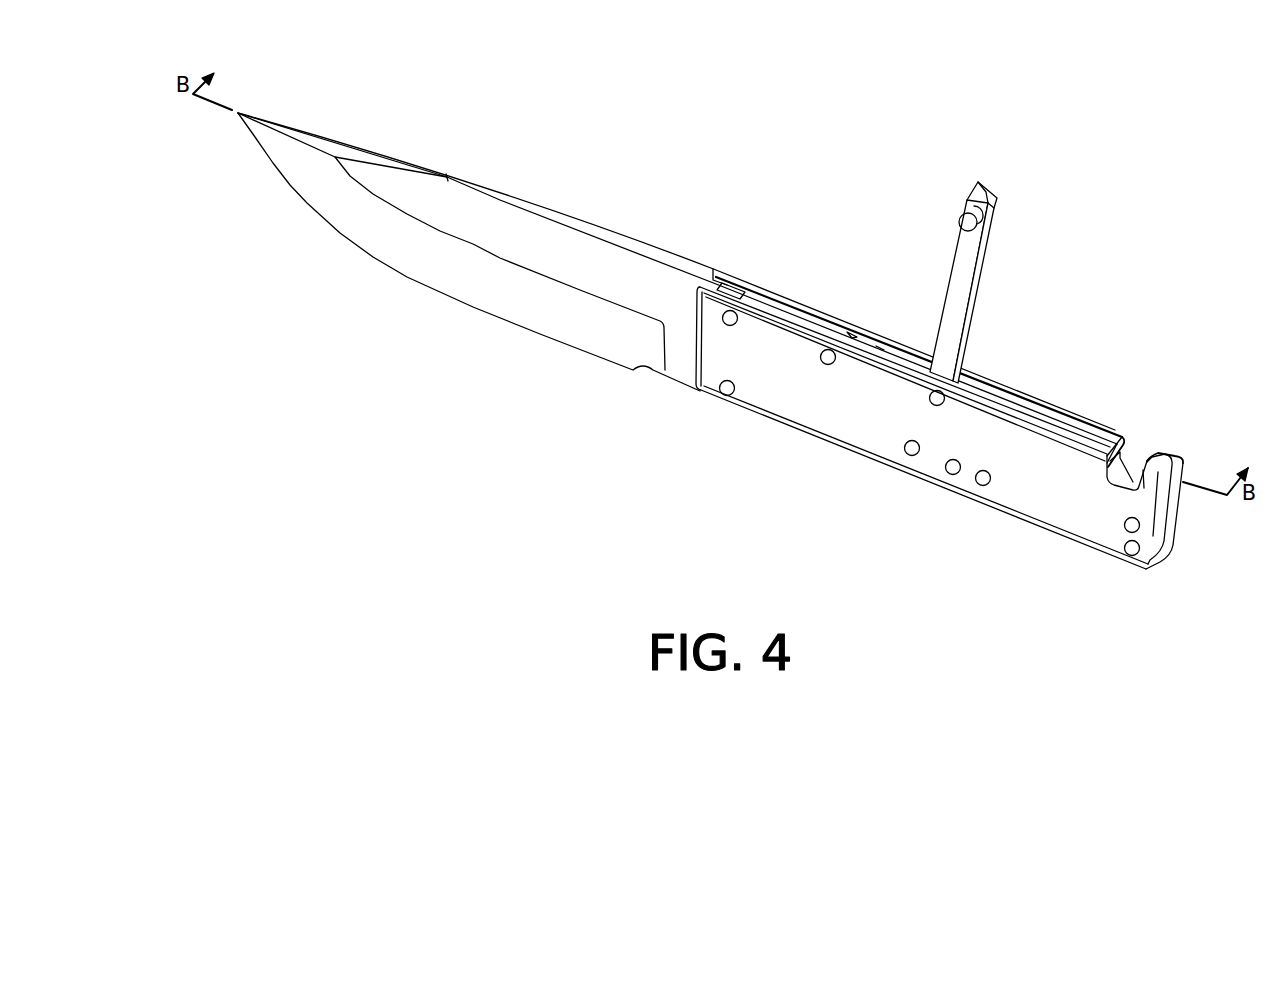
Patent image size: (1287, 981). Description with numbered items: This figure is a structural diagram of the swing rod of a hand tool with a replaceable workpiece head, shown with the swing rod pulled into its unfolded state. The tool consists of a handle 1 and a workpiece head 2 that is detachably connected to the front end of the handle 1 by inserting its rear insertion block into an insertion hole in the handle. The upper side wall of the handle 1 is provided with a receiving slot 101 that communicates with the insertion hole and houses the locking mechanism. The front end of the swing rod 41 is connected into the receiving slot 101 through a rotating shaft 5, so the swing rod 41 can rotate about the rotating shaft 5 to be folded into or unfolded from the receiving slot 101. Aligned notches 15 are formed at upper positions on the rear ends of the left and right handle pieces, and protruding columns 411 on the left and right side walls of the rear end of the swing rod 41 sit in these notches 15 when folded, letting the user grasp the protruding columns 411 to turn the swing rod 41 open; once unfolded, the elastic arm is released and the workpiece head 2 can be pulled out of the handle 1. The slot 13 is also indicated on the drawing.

The handle 1 is at (827, 440).
The workpiece head 2 is at (585, 258).
The rotating shaft 5 is at (937, 398).
The slot 13 is at (768, 302).
The notches 15 is at (1136, 458).
The swing rod 41 is at (955, 298).
The receiving slot 101 is at (1082, 432).
The protruding column 411 is at (968, 221).